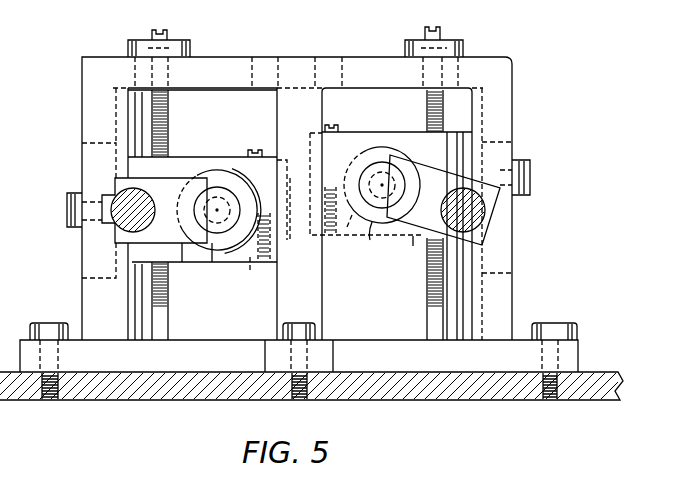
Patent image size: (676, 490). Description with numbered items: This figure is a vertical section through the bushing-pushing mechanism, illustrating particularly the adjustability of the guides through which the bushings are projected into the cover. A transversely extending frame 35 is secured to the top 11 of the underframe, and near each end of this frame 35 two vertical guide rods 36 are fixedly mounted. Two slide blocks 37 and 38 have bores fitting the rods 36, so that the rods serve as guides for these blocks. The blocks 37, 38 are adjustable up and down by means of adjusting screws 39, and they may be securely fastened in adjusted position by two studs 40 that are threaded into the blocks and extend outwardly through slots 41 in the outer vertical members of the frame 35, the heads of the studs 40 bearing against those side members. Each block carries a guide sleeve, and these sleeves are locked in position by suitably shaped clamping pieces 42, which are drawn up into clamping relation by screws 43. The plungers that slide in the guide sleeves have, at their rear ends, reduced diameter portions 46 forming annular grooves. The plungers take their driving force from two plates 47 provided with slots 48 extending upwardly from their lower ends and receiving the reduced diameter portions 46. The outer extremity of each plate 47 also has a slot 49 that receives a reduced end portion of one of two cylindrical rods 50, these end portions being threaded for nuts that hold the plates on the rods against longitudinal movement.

The top of the underframe 11 is at (598, 376).
The transversely extending frame 35 is at (512, 233).
The vertical guide rods 36 is at (166, 325).
The slide block 37 is at (370, 137).
The slide block 38 is at (203, 160).
The adjusting screws 39 is at (151, 31).
The studs 40 is at (67, 208).
The slots 41 is at (92, 278).
The clamping pieces 42 is at (250, 265).
The screws 43 is at (256, 150).
The reduced diameter portions 46 is at (220, 178).
The plates 47 is at (183, 262).
The slots 48 is at (212, 262).
The slot 49 is at (110, 222).
The cylindrical rods 50 is at (118, 190).